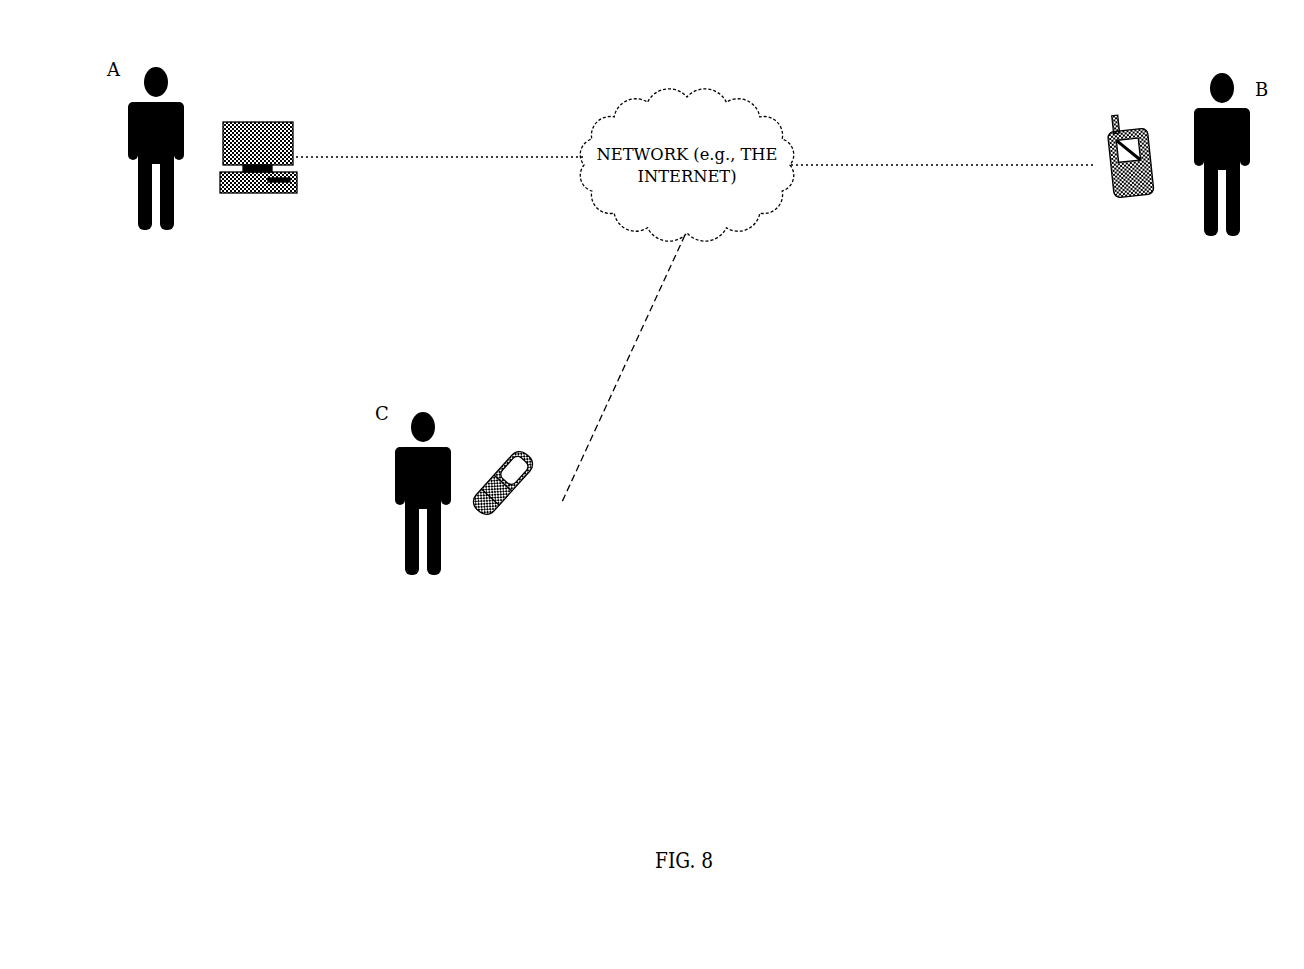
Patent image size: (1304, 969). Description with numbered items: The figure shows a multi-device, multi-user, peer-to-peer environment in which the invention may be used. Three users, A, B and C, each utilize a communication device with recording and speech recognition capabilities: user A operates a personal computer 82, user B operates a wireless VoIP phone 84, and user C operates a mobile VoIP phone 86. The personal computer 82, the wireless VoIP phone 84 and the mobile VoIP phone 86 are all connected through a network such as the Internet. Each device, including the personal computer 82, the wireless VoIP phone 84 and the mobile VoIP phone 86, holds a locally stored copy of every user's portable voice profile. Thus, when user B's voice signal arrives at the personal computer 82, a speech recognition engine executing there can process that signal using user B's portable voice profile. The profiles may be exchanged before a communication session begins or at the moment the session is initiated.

The personal computer 82 is at (298, 135).
The wireless VoIP phone 84 is at (1146, 199).
The mobile VoIP phone 86 is at (532, 478).